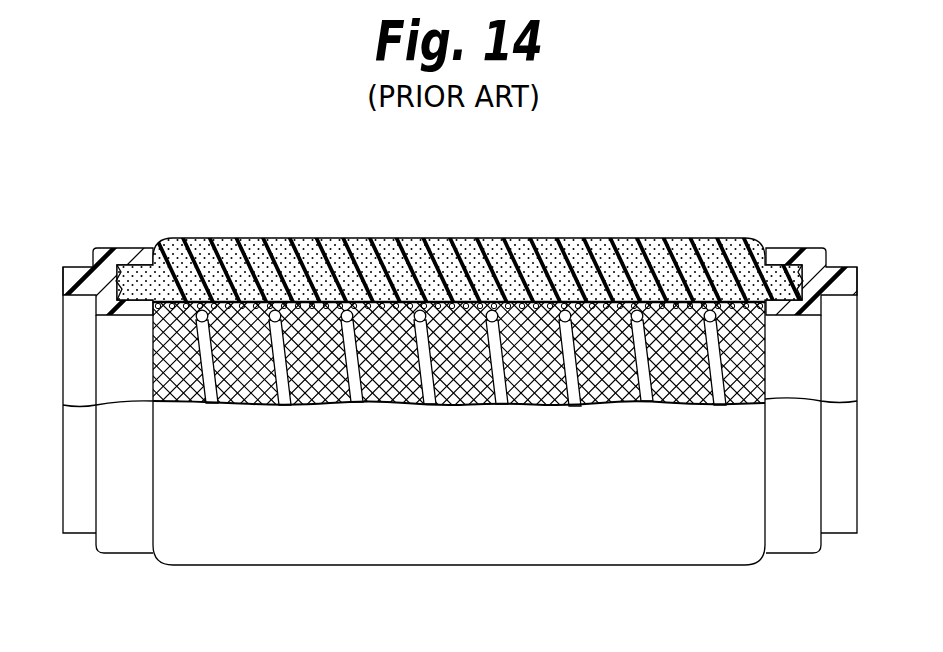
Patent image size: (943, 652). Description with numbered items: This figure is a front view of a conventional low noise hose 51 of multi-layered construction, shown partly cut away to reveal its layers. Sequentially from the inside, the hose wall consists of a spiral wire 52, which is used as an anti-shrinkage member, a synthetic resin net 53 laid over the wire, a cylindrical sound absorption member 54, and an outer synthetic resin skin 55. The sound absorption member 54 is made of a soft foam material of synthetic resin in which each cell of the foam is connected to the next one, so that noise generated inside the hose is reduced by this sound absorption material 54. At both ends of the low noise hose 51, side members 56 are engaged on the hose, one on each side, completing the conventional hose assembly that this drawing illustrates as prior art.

The low noise hose 51 is at (473, 226).
The spiral wire 52 is at (207, 377).
The synthetic resin net 53 is at (170, 342).
The cylindrical sound absorption member 54 is at (368, 238).
The synthetic resin skin 55 is at (510, 238).
The side member 56 is at (131, 248).